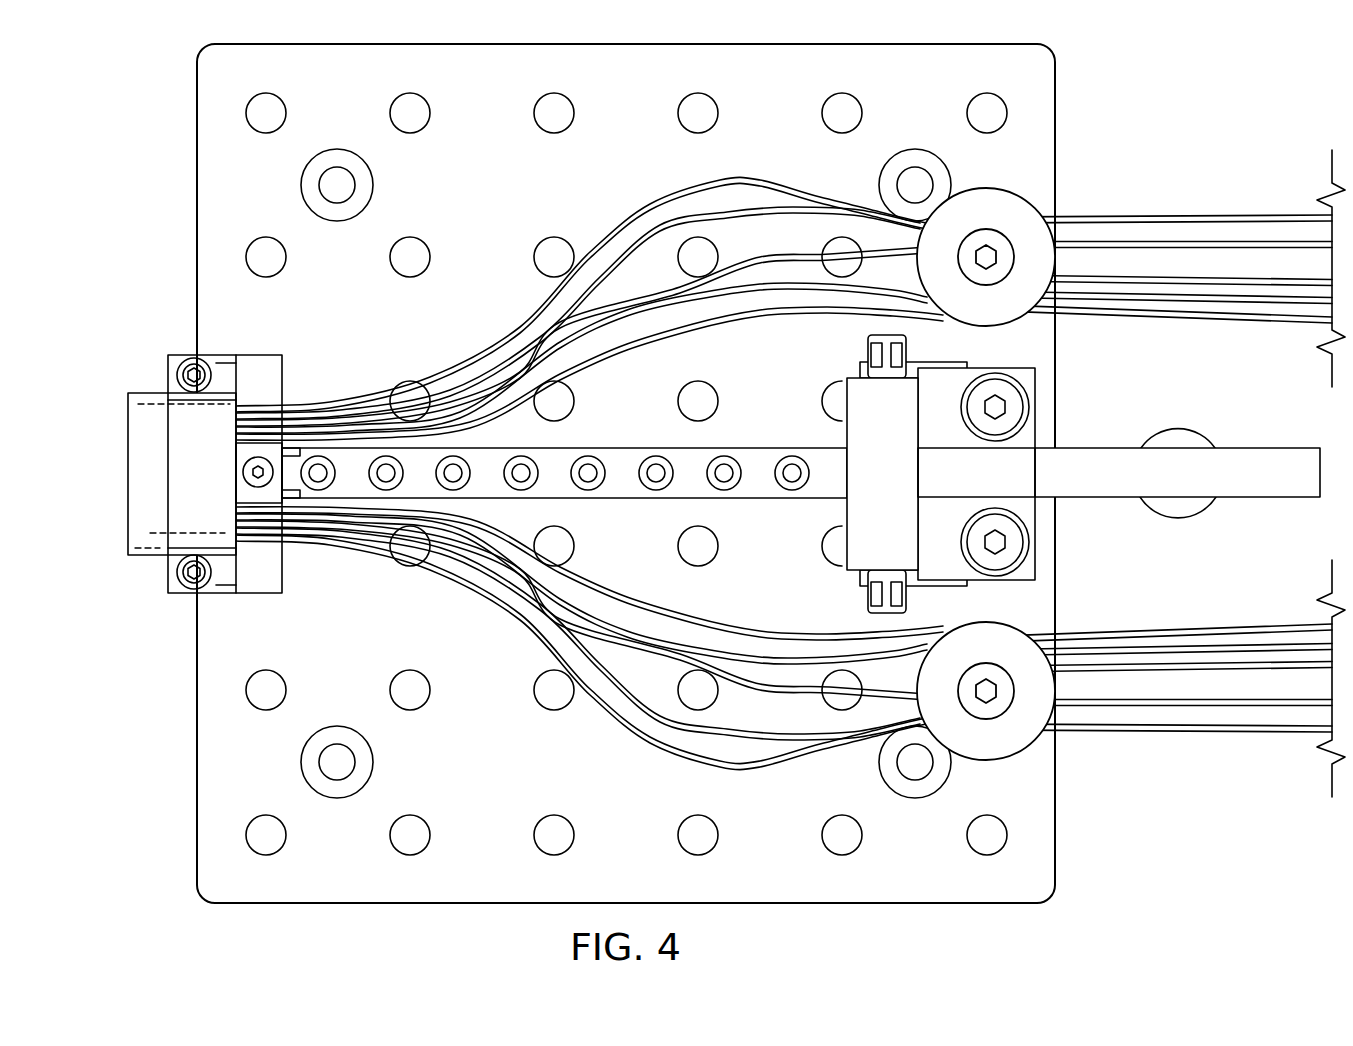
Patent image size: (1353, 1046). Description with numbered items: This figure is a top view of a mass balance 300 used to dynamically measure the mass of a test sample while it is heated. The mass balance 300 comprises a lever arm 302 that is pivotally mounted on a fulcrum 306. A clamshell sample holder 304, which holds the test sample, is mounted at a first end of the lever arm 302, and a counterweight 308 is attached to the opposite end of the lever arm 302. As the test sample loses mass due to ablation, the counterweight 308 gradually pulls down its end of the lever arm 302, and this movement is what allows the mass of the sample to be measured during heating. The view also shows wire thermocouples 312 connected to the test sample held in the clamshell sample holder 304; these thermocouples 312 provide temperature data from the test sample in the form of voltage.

The mass balance 300 is at (156, 257).
The lever arm 302 is at (758, 446).
The clamshell sample holder 304 is at (127, 472).
The fulcrum 306 is at (878, 598).
The counterweight 308 is at (1182, 427).
The wire thermocouples 312 is at (486, 660).